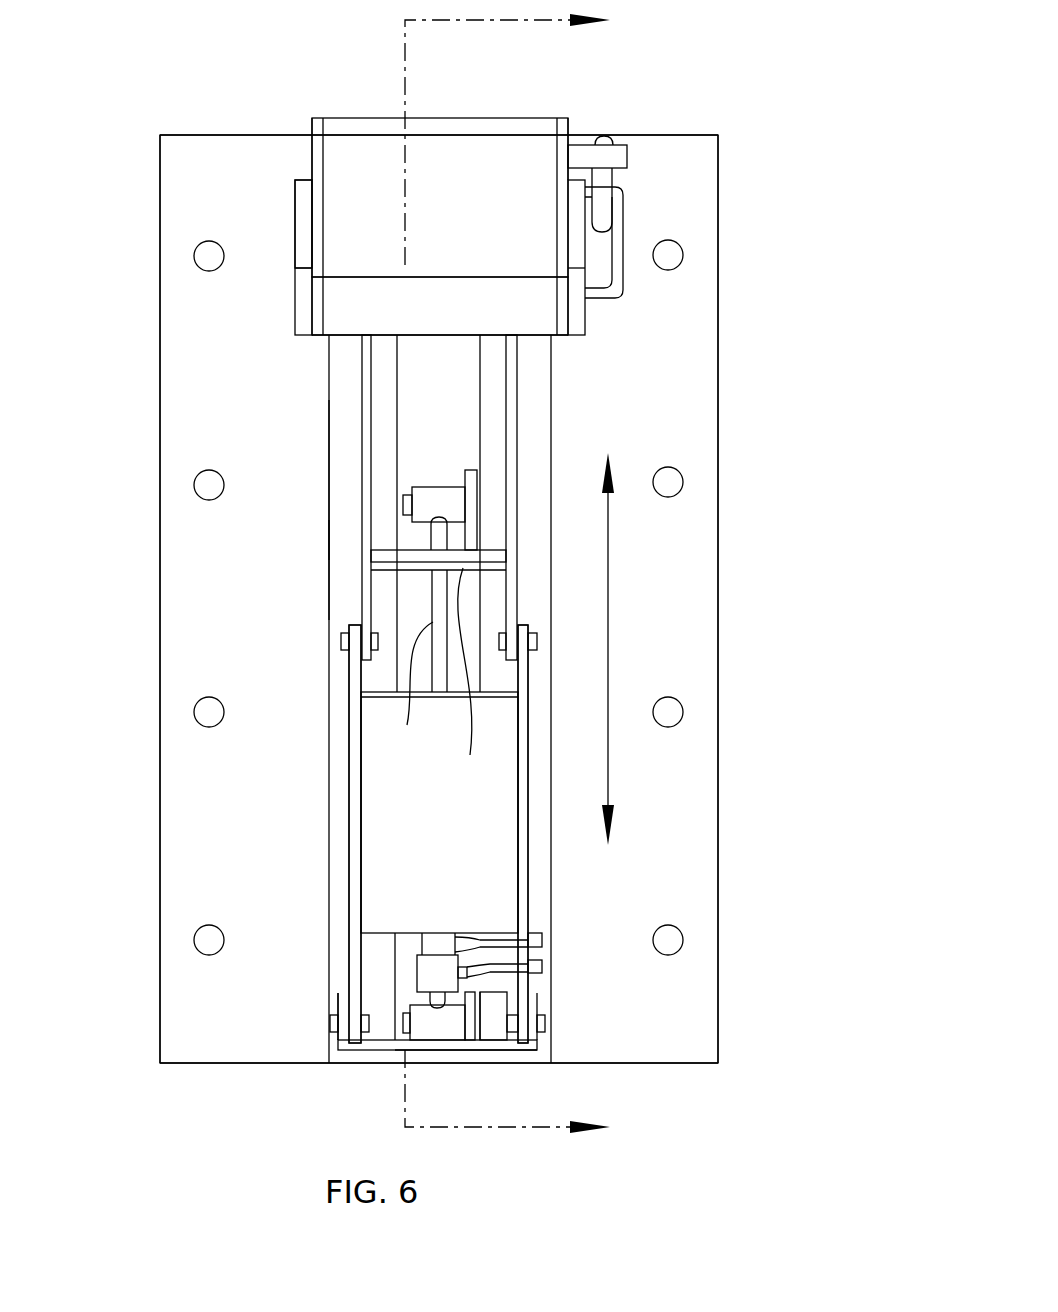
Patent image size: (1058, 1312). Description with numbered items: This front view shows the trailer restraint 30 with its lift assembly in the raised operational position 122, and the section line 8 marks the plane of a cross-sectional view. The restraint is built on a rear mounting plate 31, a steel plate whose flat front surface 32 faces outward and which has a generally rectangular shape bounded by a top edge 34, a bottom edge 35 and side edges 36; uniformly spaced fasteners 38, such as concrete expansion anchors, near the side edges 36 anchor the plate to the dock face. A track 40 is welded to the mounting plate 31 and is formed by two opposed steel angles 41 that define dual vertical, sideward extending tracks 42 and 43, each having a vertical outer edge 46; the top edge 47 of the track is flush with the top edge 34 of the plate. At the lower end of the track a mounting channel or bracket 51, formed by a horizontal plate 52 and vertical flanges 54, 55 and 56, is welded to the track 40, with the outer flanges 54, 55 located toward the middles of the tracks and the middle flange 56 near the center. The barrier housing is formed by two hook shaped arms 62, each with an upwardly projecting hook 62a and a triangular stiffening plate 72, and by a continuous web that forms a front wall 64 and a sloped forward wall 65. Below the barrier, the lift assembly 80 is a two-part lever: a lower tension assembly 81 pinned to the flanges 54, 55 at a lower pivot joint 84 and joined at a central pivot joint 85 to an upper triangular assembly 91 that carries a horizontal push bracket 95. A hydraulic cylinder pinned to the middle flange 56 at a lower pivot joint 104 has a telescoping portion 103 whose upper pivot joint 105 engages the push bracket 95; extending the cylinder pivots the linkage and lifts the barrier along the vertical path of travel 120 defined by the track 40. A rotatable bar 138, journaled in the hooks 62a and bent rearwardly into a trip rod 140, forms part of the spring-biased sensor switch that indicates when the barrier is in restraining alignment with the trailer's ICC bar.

The section line 8- 8 is at (518, 575).
The trailer restraint 30 is at (678, 124).
The rear mounting plate 31 is at (690, 408).
The front surface 32 is at (657, 366).
The top edge 34 is at (182, 133).
The bottom edge 35 is at (210, 1065).
The side edges 36 is at (158, 230).
The fasteners 38 is at (668, 482).
The track 40 is at (320, 511).
The opposed steel angles 41 is at (335, 548).
The track 42 is at (544, 416).
The track 43 is at (359, 406).
The vertical outer edge 46 is at (328, 370).
The top edge of the track 47 is at (363, 1065).
The mounting channel 51 is at (535, 1043).
The horizontal plate 52 is at (493, 1048).
The outer flange 54 is at (533, 1000).
The outer flange 55 is at (342, 996).
The middle flange 56 is at (497, 1008).
The hook shaped arms 62 is at (315, 258).
The upwardly projecting hook 62a is at (315, 157).
The front wall 64 is at (461, 324).
The sloped forward wall 65 is at (459, 220).
The stiffening plate 72 is at (295, 215).
The lift assembly 80 is at (352, 596).
The lower tension assembly 81 is at (360, 858).
The lower pivot joint 84 is at (330, 1022).
The central pivot joint 85 is at (345, 641).
The triangular push assembly 91 is at (365, 448).
The horizontal push bracket 95 is at (456, 674).
The telescoping portion 103 is at (408, 687).
The lower pivot joint 104 is at (433, 1035).
The upper pivot joint 105 is at (437, 495).
The vertical path of travel 120 is at (610, 617).
The raised operational position 122 is at (286, 98).
The rotatable bar 138 is at (628, 158).
The trip rod 140 is at (613, 190).